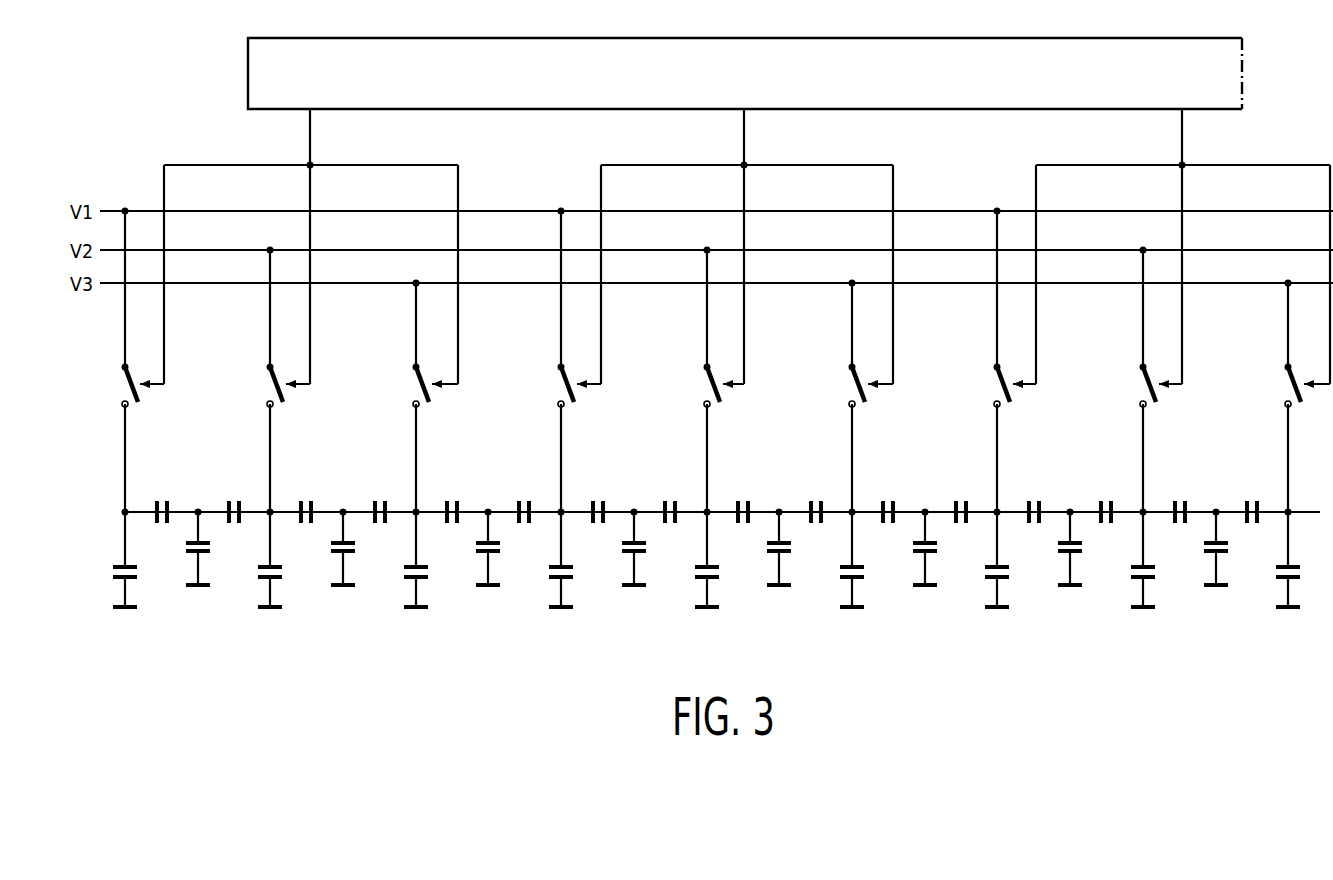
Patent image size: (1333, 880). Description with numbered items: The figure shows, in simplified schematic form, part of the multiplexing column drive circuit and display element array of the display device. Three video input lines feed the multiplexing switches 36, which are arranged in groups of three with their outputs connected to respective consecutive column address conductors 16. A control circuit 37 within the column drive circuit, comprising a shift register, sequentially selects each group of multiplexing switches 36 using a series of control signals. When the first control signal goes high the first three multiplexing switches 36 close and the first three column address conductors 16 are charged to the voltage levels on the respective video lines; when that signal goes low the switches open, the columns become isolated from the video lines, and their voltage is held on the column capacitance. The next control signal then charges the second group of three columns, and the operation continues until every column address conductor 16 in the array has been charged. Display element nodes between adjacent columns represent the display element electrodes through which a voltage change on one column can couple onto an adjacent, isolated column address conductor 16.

The control circuit 37 is at (248, 66).
The multiplexing switches 36 is at (263, 392).
The column address conductors 16 is at (124, 543).